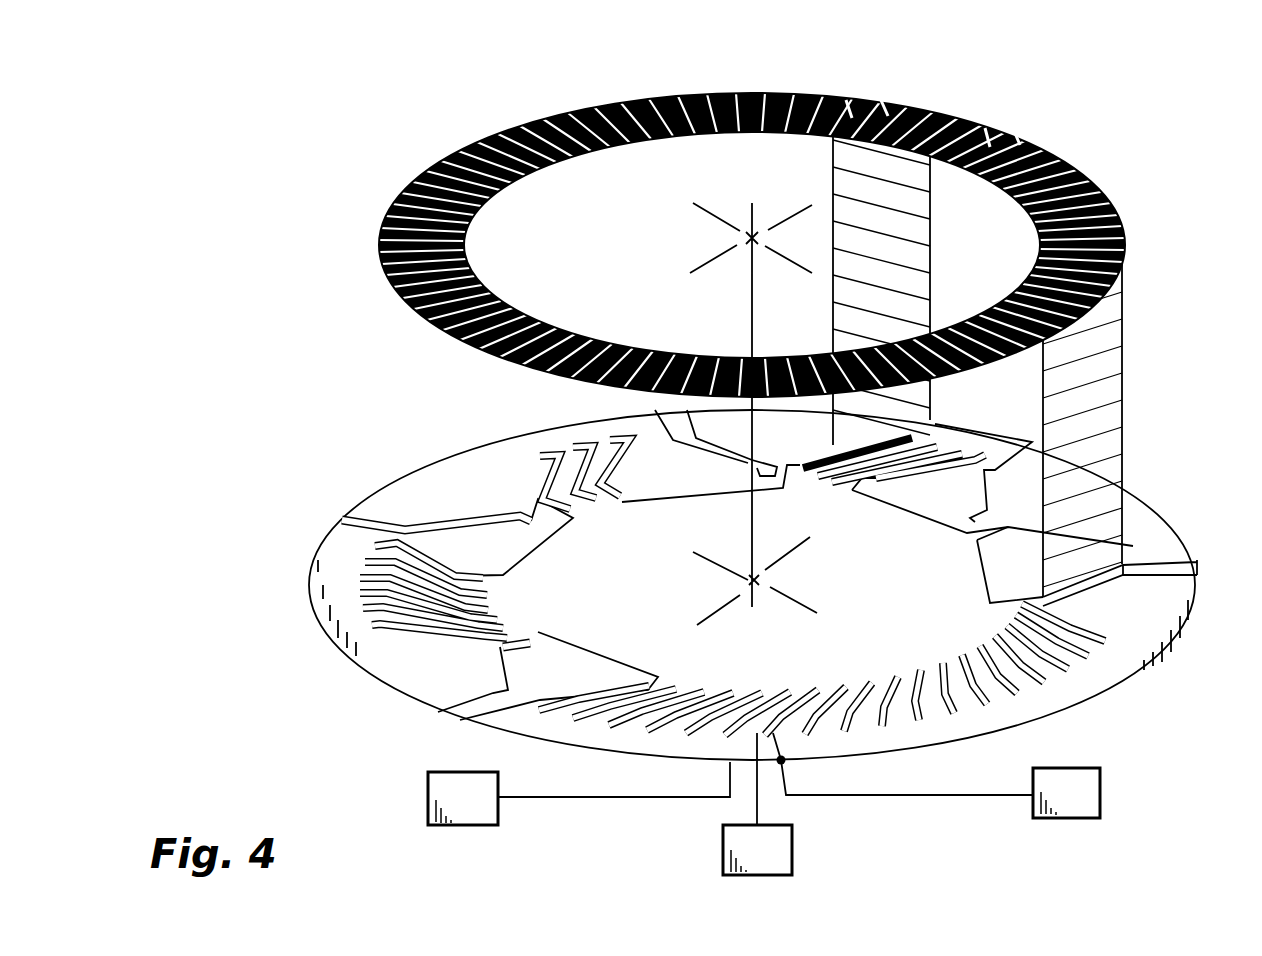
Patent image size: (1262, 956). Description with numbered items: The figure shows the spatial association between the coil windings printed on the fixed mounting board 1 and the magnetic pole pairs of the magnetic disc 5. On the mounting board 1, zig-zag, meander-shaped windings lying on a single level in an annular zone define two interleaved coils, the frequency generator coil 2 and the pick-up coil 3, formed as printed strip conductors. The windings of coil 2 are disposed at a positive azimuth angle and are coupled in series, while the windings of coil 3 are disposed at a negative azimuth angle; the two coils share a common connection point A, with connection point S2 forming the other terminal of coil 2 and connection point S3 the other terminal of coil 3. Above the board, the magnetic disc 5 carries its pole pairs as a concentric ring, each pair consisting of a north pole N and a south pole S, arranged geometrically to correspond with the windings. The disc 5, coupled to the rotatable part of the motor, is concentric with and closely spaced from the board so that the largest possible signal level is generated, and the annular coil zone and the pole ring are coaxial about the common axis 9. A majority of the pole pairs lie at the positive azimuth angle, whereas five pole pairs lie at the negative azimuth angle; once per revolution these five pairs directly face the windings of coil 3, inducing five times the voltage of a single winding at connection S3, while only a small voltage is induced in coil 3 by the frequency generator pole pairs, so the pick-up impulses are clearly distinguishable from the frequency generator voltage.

The mounting board 1 is at (1160, 515).
The coil 2 is at (1095, 652).
The coil 3 is at (1188, 568).
The magnetic disc 5 is at (1110, 206).
The common axis 9 is at (750, 316).
The south pole S is at (849, 104).
The north pole N is at (880, 102).
The connection point S2 is at (792, 852).
The connection point S3 is at (460, 825).
The common connection point A is at (1100, 792).